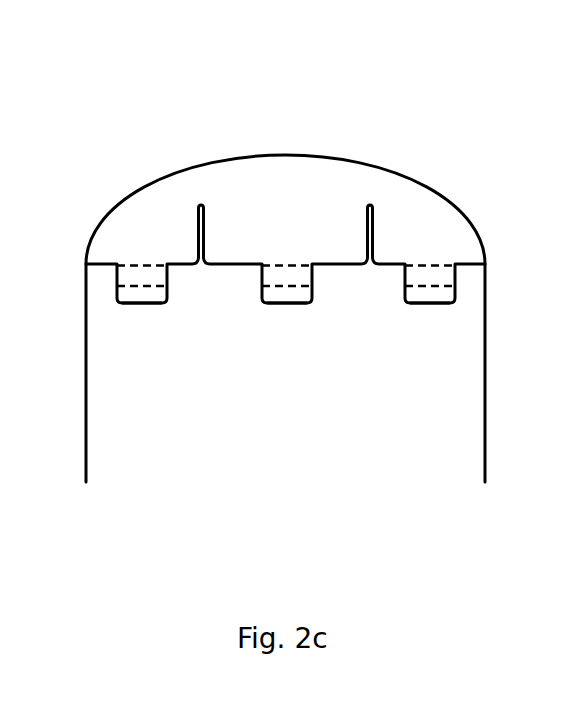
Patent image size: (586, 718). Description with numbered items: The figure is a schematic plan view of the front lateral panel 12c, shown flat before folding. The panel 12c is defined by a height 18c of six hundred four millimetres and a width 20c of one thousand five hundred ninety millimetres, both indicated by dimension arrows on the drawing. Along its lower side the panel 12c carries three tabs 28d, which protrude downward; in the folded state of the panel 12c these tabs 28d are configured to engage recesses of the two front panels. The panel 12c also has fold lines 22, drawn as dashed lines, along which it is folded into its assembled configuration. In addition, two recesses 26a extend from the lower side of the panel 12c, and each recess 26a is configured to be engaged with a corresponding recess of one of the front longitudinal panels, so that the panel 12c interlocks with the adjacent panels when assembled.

The front lateral panel 12c is at (114, 90).
The height 18c is at (282, 292).
The width 20c is at (474, 463).
The fold lines 22 is at (130, 263).
The recesses 26a is at (205, 251).
The tabs 28d is at (150, 297).